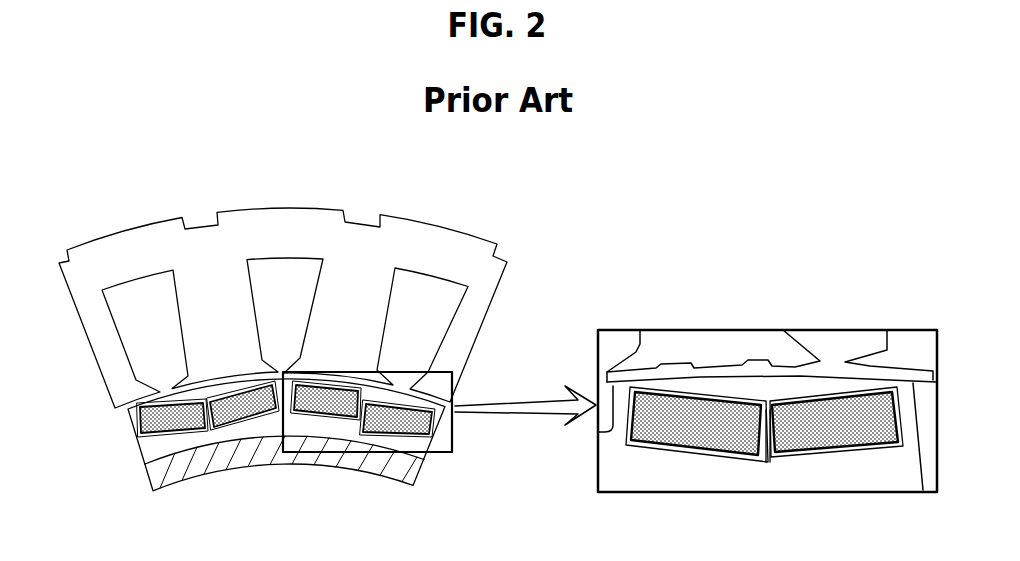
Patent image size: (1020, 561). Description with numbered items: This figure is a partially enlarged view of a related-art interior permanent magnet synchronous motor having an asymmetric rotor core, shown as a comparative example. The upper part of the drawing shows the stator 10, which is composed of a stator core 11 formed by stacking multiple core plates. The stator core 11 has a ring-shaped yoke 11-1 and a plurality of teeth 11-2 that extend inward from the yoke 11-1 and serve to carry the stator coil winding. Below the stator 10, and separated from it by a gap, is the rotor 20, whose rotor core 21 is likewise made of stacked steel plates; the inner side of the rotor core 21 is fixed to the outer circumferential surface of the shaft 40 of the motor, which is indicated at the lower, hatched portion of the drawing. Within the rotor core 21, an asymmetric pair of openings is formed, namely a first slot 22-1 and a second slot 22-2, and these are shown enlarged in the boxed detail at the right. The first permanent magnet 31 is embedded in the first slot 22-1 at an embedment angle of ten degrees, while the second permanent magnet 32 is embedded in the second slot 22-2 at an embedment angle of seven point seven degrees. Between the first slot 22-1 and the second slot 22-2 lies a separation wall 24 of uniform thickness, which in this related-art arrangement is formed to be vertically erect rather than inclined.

The stator 10 is at (462, 216).
The stator core 11 is at (506, 291).
The yoke 11-1 is at (410, 237).
The teeth 11-2 is at (353, 287).
The rotor 20 is at (120, 458).
The rotor core 21 is at (438, 468).
The first slot 22-1 is at (690, 454).
The second slot 22-2 is at (810, 457).
The separation wall 24 is at (767, 464).
The first permanent magnet 31 is at (717, 457).
The second permanent magnet 32 is at (861, 454).
The shaft 40 is at (210, 462).